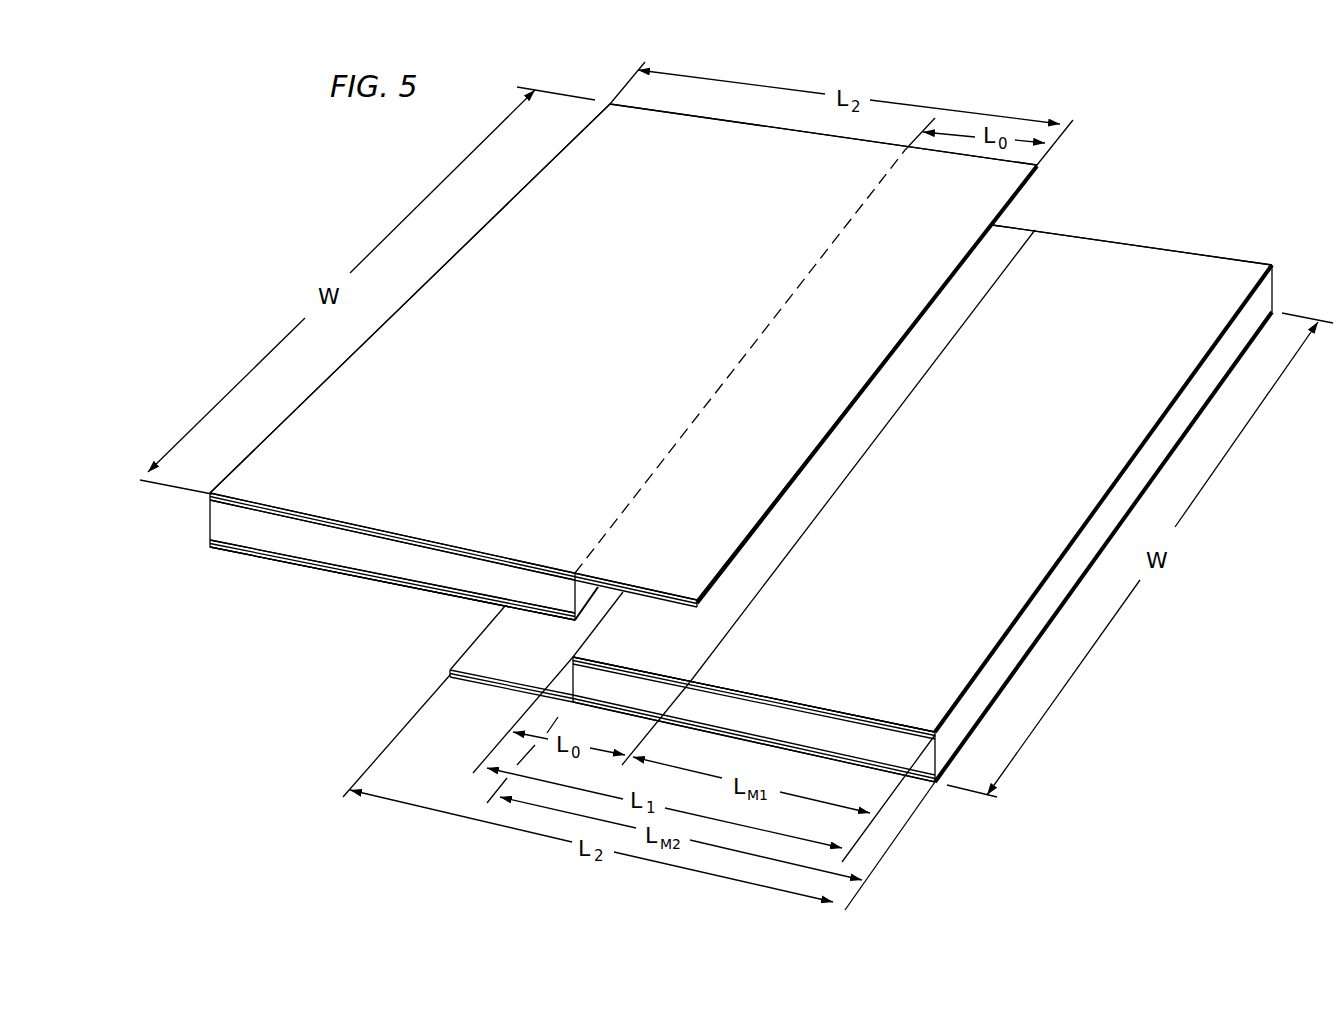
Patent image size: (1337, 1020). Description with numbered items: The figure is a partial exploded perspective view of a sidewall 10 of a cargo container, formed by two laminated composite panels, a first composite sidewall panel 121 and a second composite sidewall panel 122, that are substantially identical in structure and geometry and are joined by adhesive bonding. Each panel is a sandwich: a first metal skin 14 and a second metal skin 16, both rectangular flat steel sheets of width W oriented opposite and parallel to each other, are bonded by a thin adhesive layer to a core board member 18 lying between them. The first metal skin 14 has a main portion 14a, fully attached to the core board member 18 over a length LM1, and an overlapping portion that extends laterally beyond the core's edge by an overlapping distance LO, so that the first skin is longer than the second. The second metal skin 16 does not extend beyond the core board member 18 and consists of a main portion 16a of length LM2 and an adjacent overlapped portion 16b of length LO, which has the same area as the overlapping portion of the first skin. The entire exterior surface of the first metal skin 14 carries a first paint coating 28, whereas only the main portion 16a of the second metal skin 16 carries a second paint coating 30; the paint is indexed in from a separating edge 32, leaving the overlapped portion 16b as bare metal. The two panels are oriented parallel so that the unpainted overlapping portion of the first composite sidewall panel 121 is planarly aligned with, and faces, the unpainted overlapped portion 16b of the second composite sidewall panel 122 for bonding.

The sidewall 10 is at (1150, 178).
The first composite sidewall panel 121 is at (265, 560).
The second composite sidewall panel 122 is at (1158, 242).
The first metal skin 14 is at (367, 580).
The main portion 14a is at (873, 724).
The second metal skin 16 is at (407, 548).
The main portion 16a is at (225, 505).
The overlapped portion 16b is at (477, 665).
The core board member 18 is at (232, 533).
The first paint coating 28 is at (347, 512).
The second paint coating 30 is at (1107, 244).
The separating edge 32 is at (870, 448).